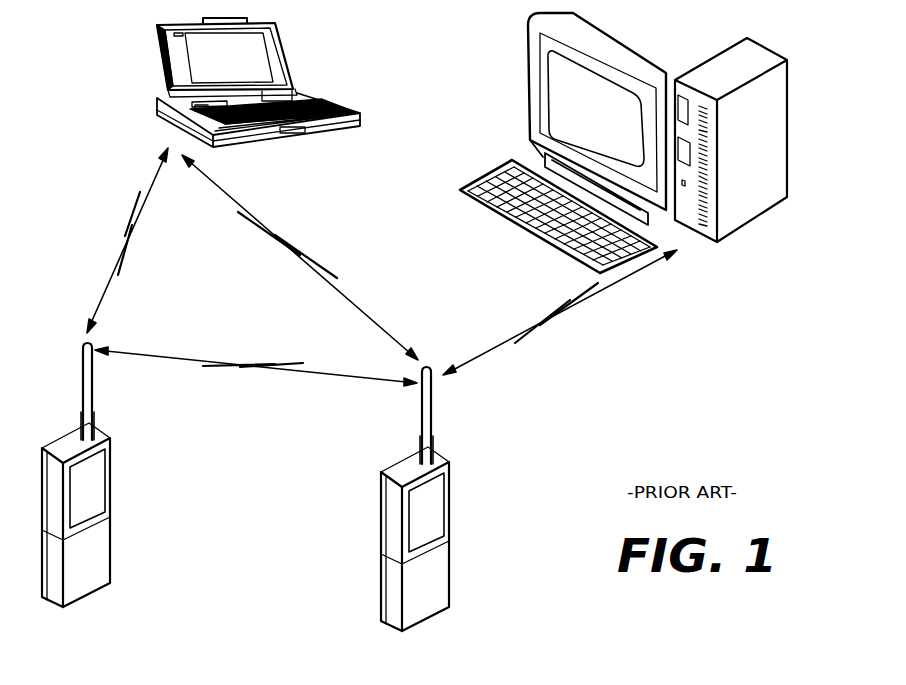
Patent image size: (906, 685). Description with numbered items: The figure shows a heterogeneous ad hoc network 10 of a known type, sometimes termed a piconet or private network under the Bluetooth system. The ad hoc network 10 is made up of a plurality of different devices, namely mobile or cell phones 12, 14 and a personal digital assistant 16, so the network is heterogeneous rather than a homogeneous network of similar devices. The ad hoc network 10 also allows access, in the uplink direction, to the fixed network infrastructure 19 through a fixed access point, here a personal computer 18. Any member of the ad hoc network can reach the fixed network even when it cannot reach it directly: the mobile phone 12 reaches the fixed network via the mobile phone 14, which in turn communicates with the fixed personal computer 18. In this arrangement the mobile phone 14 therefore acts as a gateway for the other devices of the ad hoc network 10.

The ad hoc network 10 is at (681, 415).
The mobile phone 12 is at (98, 537).
The mobile phone 14 is at (435, 562).
The personal digital assistant 16 is at (285, 62).
The personal computer 18 is at (553, 73).
The fixed network infrastructure 19 is at (742, 55).